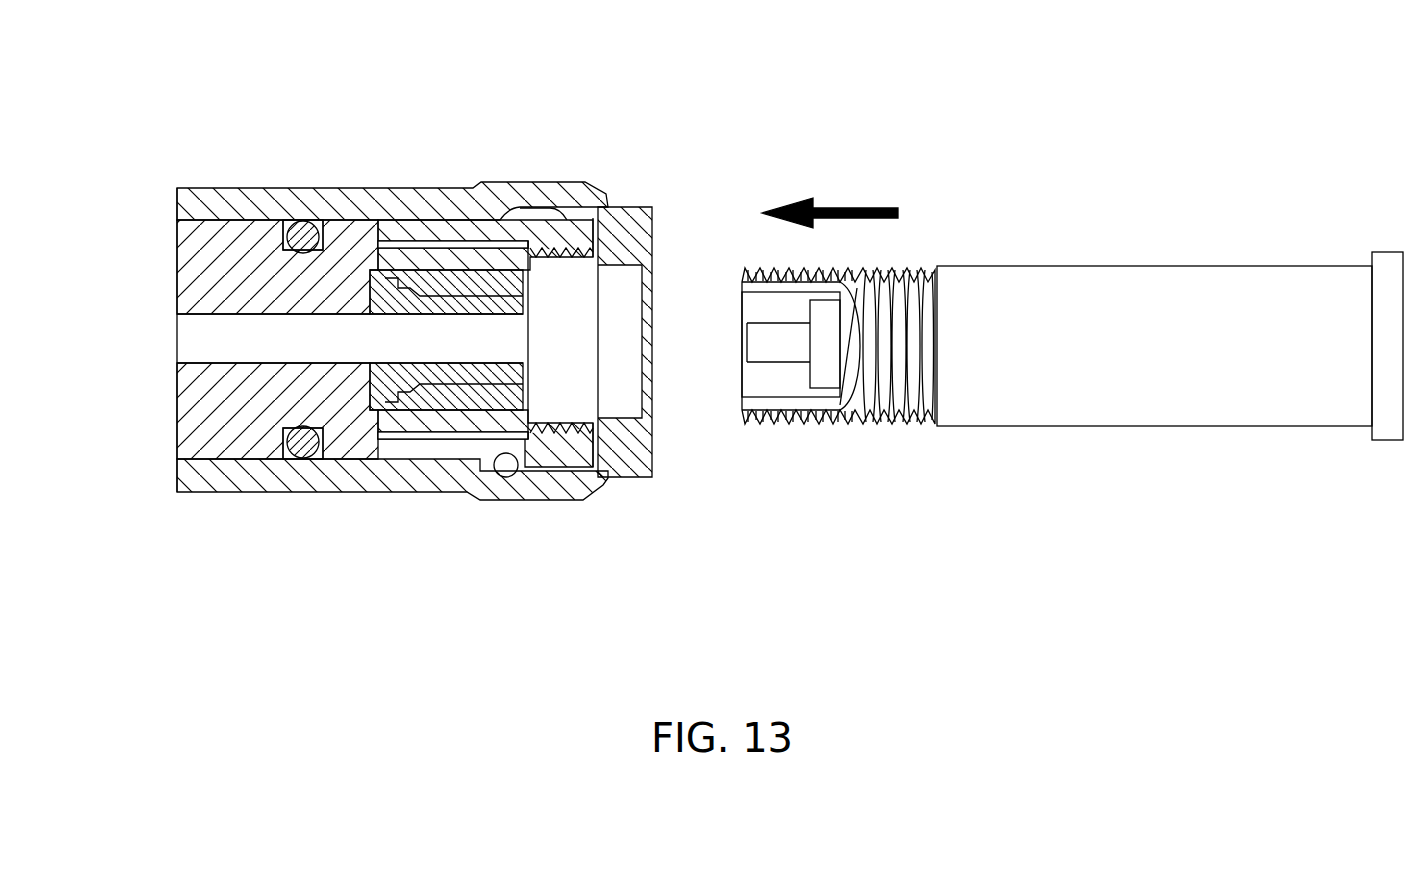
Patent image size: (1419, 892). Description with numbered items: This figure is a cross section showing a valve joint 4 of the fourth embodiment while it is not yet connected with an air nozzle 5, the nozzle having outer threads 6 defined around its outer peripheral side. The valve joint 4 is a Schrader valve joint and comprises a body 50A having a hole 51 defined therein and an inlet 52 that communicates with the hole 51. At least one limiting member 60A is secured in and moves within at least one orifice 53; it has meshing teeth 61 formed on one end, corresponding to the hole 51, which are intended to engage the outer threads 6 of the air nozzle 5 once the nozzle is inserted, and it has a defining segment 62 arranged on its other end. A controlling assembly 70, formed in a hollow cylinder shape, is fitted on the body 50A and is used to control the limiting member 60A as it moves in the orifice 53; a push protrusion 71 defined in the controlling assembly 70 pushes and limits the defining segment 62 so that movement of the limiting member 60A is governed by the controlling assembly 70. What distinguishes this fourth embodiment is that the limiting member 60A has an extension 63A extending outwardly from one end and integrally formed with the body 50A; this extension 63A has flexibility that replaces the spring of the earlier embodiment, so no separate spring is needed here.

The valve joint 4 is at (420, 364).
The air nozzle 5 is at (1040, 268).
The outer threads 6 is at (887, 403).
The body 50A is at (250, 426).
The hole 51 is at (635, 287).
The inlet 52 is at (188, 337).
The orifice 53 is at (597, 445).
The limiting member 60A is at (535, 460).
The meshing teeth 61 is at (567, 418).
The defining segment 62 is at (548, 470).
The extension 63A is at (447, 450).
The controlling assembly 70 is at (293, 193).
The push protrusion 71 is at (497, 453).